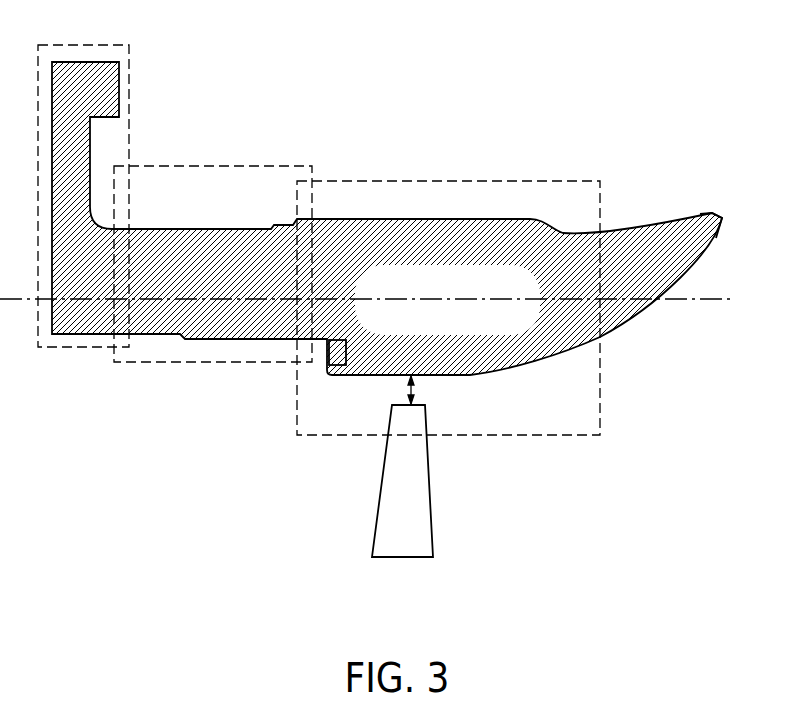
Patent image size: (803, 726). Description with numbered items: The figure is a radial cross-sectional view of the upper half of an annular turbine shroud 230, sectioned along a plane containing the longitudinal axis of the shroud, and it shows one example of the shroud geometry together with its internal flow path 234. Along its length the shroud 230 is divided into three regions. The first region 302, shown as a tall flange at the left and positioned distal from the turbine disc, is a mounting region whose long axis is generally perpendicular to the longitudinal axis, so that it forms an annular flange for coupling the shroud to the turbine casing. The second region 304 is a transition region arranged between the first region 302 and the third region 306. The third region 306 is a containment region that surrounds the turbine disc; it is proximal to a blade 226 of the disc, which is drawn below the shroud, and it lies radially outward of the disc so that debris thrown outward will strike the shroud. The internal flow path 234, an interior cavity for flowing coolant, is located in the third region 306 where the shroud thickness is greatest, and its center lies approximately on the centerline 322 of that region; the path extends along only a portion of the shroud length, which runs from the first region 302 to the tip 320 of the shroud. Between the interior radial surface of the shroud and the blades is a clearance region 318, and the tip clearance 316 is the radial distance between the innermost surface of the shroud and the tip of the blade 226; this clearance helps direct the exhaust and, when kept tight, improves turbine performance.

The shroud 230 is at (662, 176).
The first region 302 is at (130, 55).
The second region 304 is at (222, 166).
The third region 306 is at (523, 181).
The tip 320 is at (722, 218).
The centerline 322 is at (730, 299).
The internal flow path 234 is at (492, 310).
The tip clearance 316 is at (405, 396).
The clearance region 318 is at (427, 389).
The blade 226 is at (430, 492).